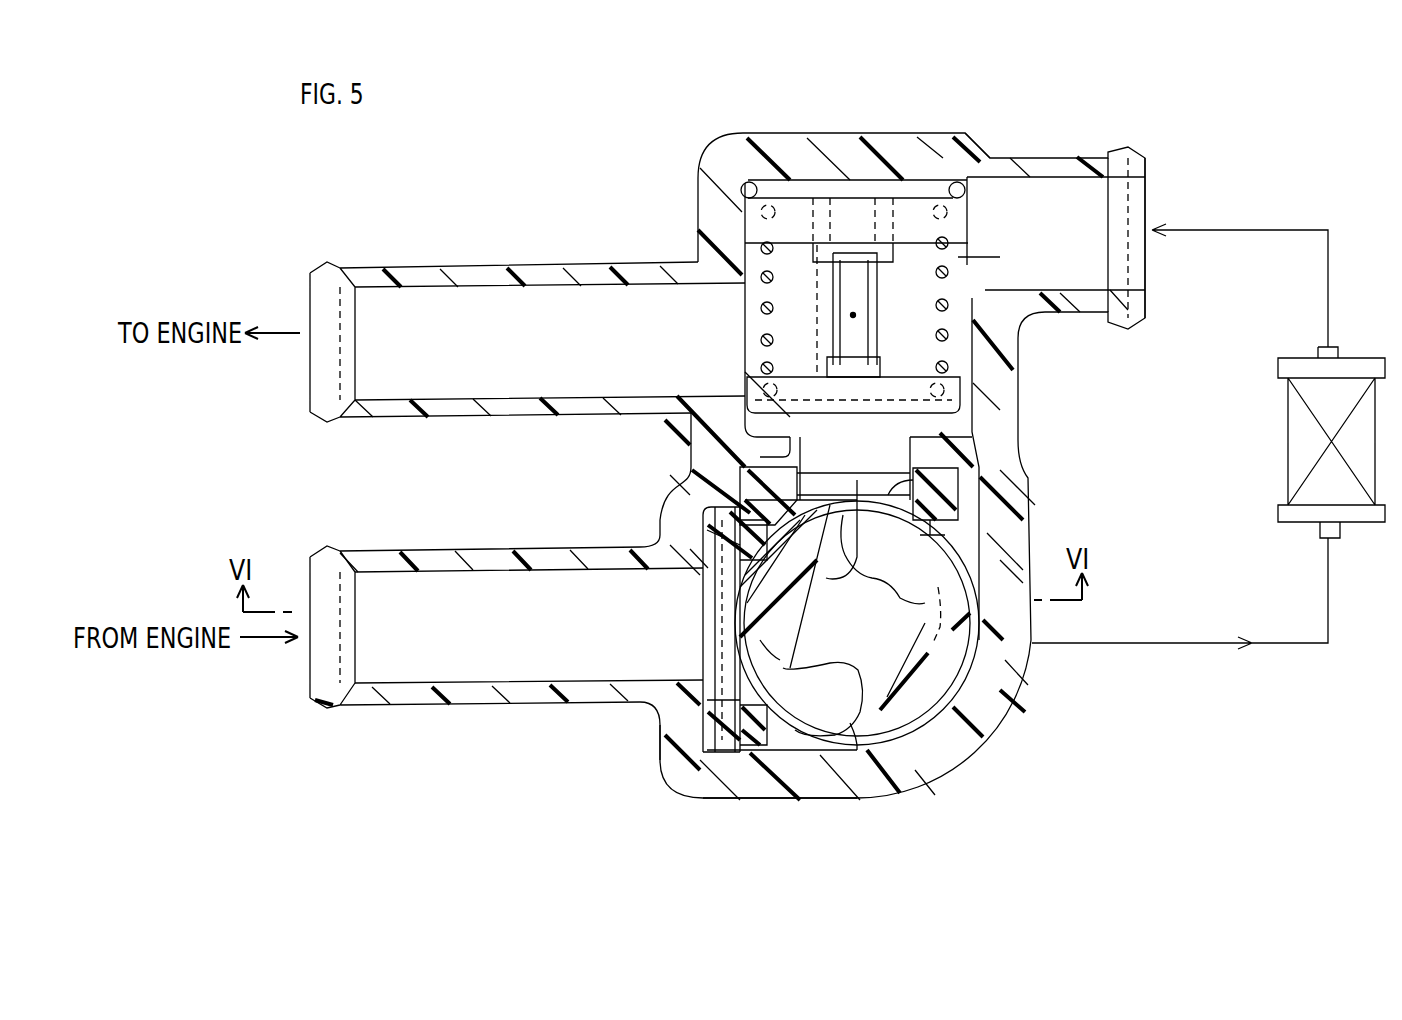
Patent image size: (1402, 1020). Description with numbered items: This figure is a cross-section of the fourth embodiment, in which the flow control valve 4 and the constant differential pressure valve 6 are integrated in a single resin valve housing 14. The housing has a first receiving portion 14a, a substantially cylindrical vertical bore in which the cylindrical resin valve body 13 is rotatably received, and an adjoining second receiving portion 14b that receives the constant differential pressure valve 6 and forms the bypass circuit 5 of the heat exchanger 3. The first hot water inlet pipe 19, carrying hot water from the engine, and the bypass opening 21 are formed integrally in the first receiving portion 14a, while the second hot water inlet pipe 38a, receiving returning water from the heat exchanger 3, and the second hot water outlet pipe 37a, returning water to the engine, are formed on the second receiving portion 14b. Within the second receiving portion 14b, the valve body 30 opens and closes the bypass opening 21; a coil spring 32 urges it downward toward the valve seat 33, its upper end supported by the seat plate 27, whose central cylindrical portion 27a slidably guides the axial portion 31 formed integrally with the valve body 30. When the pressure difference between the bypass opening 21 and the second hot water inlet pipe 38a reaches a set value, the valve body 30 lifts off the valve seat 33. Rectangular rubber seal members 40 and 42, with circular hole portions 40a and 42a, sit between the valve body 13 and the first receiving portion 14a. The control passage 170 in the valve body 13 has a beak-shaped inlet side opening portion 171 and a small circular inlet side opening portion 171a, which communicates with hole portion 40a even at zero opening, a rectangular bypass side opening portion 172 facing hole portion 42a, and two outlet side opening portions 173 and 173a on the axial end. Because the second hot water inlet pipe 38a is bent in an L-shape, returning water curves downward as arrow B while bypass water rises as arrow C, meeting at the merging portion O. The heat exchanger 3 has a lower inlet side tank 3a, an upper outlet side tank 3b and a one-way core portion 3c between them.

The heat exchanger 3 is at (1208, 436).
The inlet side tank 3a is at (1312, 512).
The outlet side tank 3b is at (1300, 368).
The core portion 3c is at (1287, 417).
The flow control valve 4 is at (655, 806).
The bypass circuit 5 is at (758, 430).
The constant differential pressure valve 6 is at (811, 347).
The valve body 13 is at (975, 690).
The valve housing 14 is at (1055, 677).
The first receiving portion 14a is at (957, 750).
The second receiving portion 14b is at (943, 148).
The first hot water inlet pipe 19 is at (480, 697).
The bypass opening 21 is at (883, 432).
The seat plate 27 is at (885, 188).
The cylindrical portion 27a is at (818, 215).
The valve body 30 is at (885, 398).
The axial portion 31 is at (853, 315).
The coil spring 32 is at (1000, 245).
The valve seat 33 is at (793, 450).
The second hot water outlet pipe 37a is at (487, 267).
The second hot water inlet pipe 38a is at (1105, 163).
The seal member 40 is at (778, 715).
The hole portion 40a is at (723, 648).
The seal member 42 is at (925, 485).
The hole portion 42a is at (890, 455).
The control passage 170 is at (948, 745).
The inlet side opening portion 171 is at (745, 690).
The inlet side opening portion 171a is at (727, 533).
The bypass side opening portion 172 is at (960, 527).
The outlet side opening portion 173 is at (955, 542).
The outlet side opening portion 173a is at (850, 723).
The arrow B is at (892, 308).
The merging portion O is at (973, 257).
The arrow C is at (853, 377).